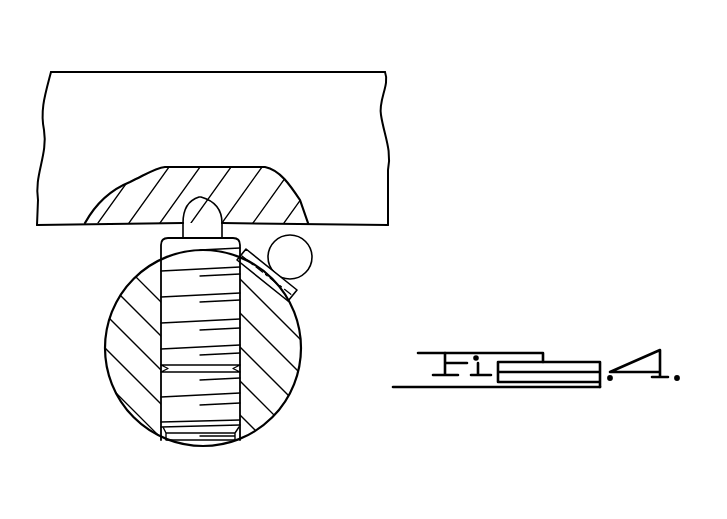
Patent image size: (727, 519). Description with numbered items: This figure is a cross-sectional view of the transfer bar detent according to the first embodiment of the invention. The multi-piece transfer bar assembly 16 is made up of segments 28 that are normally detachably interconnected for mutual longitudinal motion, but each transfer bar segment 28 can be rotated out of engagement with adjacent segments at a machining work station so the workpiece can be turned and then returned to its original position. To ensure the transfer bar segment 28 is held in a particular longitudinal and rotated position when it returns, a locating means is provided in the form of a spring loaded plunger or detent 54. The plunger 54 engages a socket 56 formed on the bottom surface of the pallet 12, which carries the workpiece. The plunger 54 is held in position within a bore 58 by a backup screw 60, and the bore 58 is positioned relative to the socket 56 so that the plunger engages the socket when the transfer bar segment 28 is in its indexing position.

The pallet 12 is at (223, 72).
The spring loaded plunger or detent 54 is at (193, 217).
The socket 56 is at (216, 206).
The bore 58 is at (170, 280).
The backup screw 60 is at (213, 410).
The multi-piece transfer bar assembly 16 is at (103, 333).
The transfer bar segment 28 is at (299, 340).